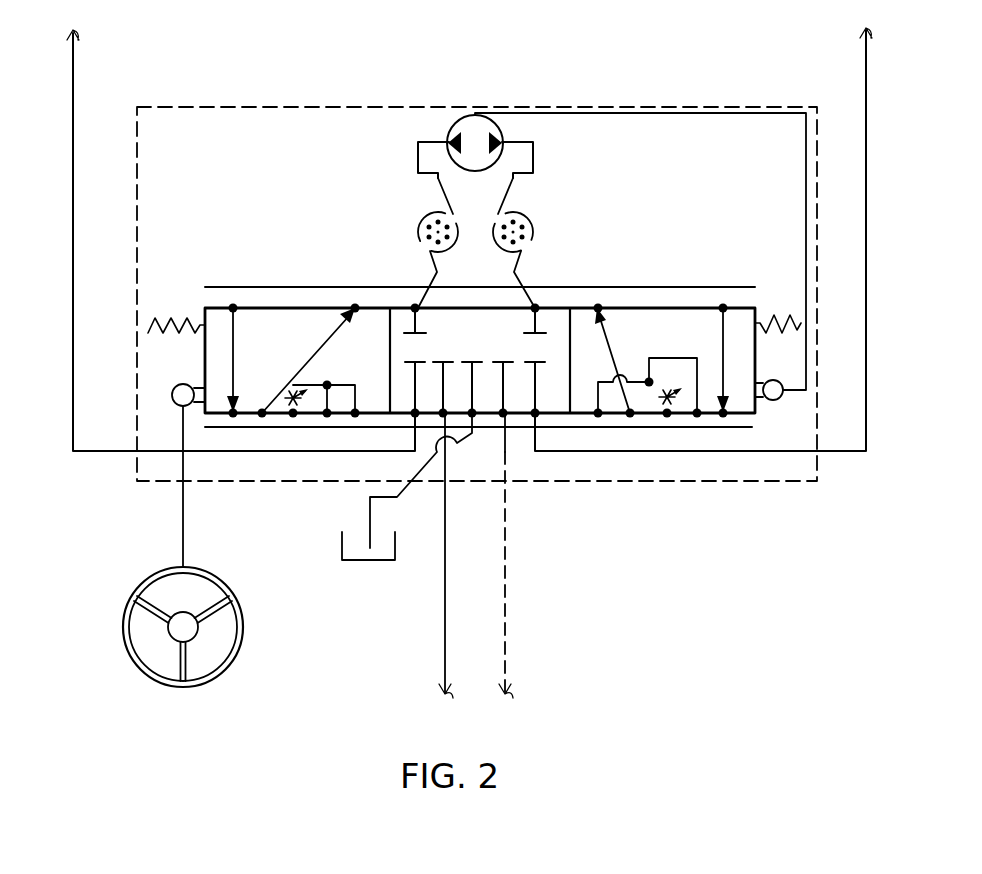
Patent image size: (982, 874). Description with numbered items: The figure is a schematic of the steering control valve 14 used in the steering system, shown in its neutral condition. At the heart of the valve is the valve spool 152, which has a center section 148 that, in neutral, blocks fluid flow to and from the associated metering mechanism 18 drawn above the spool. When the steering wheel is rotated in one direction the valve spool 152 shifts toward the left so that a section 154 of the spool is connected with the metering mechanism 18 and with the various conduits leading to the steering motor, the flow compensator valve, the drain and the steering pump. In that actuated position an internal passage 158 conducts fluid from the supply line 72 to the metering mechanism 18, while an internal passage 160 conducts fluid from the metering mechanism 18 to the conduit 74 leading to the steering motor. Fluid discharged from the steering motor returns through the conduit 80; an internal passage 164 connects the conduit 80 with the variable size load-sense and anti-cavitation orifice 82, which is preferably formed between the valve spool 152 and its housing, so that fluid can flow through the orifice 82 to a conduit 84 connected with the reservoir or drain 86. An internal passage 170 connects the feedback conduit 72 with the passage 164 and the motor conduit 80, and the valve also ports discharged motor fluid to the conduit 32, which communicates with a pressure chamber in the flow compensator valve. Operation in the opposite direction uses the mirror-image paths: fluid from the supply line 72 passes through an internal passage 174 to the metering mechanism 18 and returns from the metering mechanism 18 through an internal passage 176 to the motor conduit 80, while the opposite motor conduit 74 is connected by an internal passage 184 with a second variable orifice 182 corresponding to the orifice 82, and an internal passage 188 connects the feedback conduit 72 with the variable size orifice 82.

The steering control valve 14 is at (647, 100).
The metering mechanism 18 is at (575, 196).
The conduit 32 is at (507, 618).
The supply line 72 is at (445, 598).
The conduit 74 is at (866, 362).
The conduit 80 is at (73, 364).
The variable size load-sense and anti-cavitation orifice 82 is at (675, 408).
The conduit 84 is at (404, 490).
The reservoir 86 is at (342, 548).
The center section 148 is at (472, 318).
The valve spool 152 is at (700, 302).
The section 154 is at (755, 416).
The internal passage 158 is at (615, 318).
The internal passage 160 is at (726, 359).
The internal passage 164 is at (598, 385).
The internal passage 170 is at (675, 359).
The internal passage 174 is at (318, 350).
The internal passage 176 is at (233, 352).
The variable orifice 182 is at (300, 405).
The internal passage 184 is at (372, 381).
The internal passage 188 is at (333, 402).